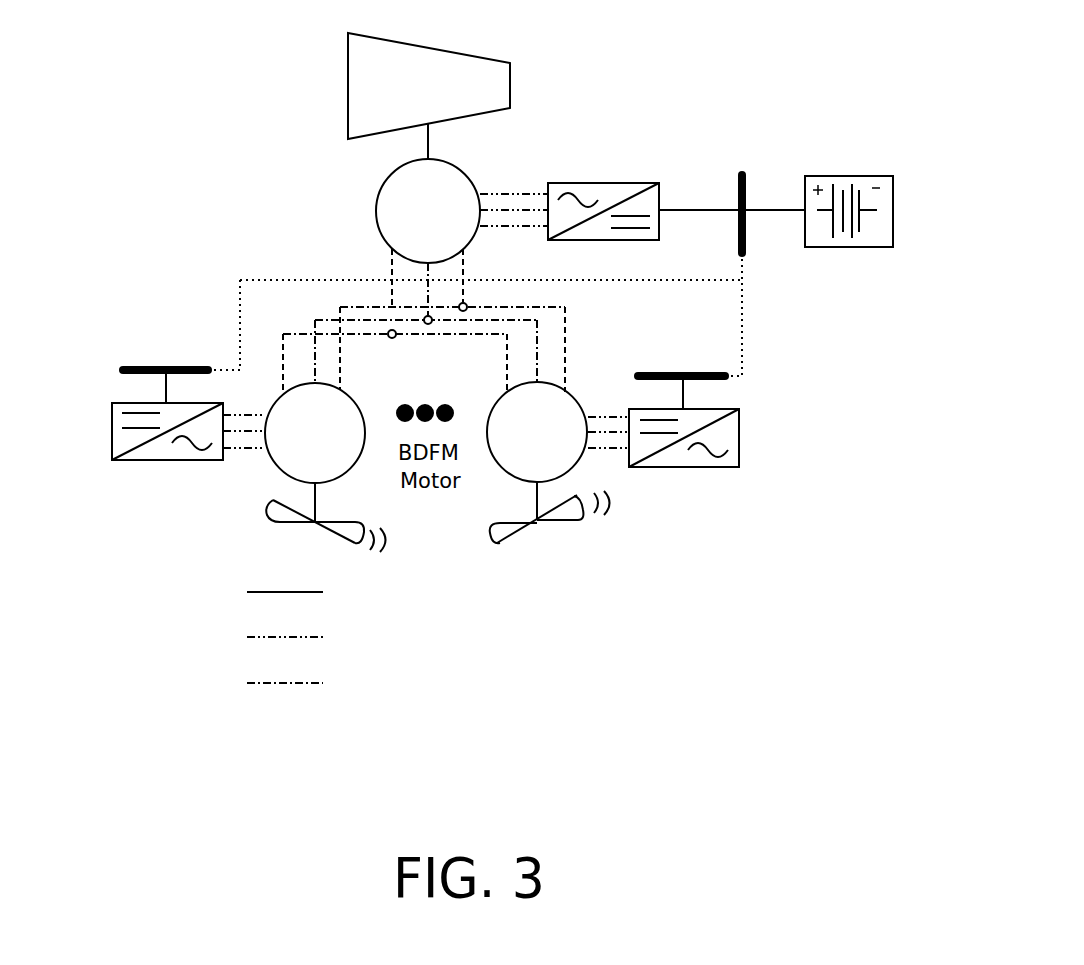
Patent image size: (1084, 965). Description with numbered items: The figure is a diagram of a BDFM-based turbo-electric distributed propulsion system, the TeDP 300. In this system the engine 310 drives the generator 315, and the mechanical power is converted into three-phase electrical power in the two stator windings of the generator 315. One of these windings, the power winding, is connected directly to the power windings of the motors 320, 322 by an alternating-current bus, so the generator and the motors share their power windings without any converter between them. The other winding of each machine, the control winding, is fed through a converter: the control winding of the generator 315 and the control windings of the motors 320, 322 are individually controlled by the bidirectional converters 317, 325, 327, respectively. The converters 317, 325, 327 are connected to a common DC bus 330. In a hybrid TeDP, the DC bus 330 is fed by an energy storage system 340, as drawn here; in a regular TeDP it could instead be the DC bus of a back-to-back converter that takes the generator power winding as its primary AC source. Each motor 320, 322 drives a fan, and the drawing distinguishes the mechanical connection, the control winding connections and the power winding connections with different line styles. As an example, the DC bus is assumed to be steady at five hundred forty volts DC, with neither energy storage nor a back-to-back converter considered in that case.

The BDFM-based TeDP 300 is at (508, 747).
The engine 310 is at (446, 72).
The generator 315 is at (247, 190).
The bidirectional converter 317 is at (632, 145).
The motor 320 is at (295, 468).
The motor 322 is at (525, 470).
The bidirectional converter 325 is at (148, 499).
The bidirectional converter 327 is at (860, 452).
The DC bus 330 is at (787, 148).
The energy storage system 340 is at (877, 180).